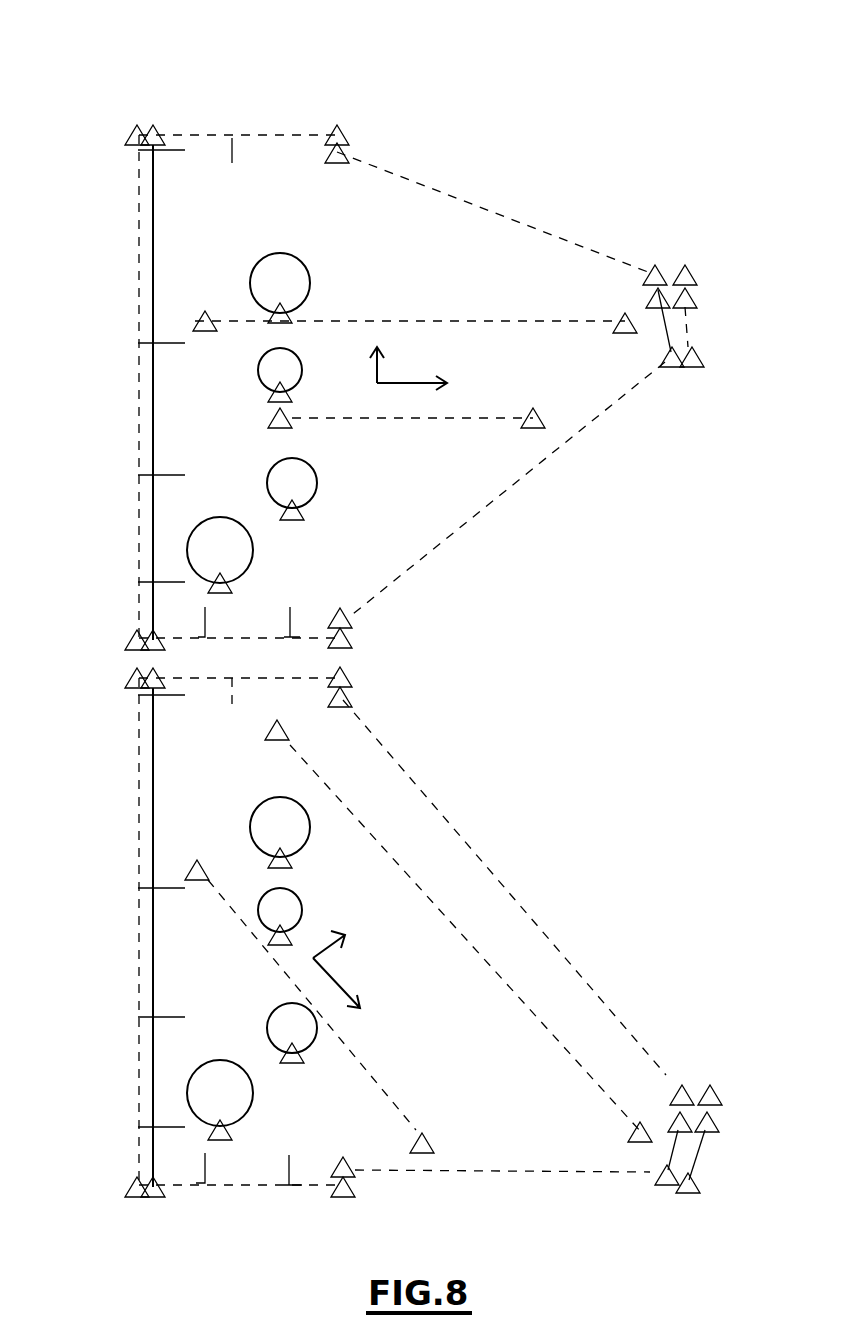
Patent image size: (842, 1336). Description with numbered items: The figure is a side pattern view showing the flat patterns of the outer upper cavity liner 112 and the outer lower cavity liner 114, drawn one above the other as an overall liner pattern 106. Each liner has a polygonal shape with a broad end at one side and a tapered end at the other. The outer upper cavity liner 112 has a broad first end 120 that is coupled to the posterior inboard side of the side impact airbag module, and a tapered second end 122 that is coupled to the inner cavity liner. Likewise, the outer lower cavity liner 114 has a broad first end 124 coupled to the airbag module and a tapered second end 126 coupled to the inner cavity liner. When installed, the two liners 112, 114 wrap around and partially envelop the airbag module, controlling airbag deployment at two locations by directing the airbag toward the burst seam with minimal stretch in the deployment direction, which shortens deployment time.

The sensor array assembly 106 is at (388, 601).
The outer upper cavity liner 112 is at (521, 470).
The outer lower cavity liner 114 is at (522, 908).
The first end of outer upper cavity liner 120 is at (173, 413).
The second end of outer upper cavity liner 122 is at (583, 268).
The first end of outer lower cavity liner 124 is at (175, 970).
The second end of outer lower cavity liner 126 is at (643, 1088).